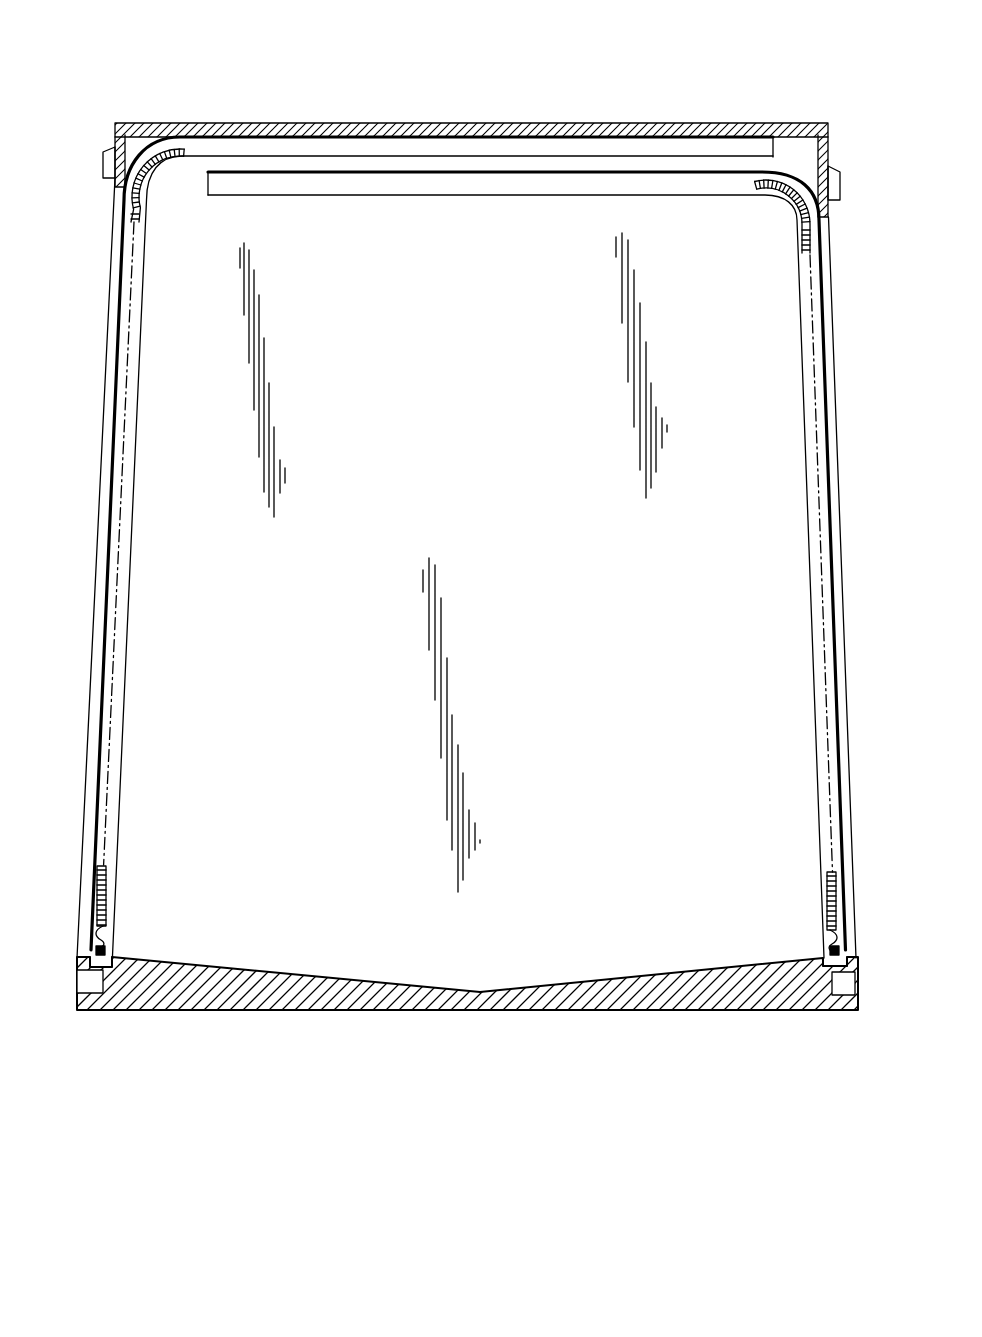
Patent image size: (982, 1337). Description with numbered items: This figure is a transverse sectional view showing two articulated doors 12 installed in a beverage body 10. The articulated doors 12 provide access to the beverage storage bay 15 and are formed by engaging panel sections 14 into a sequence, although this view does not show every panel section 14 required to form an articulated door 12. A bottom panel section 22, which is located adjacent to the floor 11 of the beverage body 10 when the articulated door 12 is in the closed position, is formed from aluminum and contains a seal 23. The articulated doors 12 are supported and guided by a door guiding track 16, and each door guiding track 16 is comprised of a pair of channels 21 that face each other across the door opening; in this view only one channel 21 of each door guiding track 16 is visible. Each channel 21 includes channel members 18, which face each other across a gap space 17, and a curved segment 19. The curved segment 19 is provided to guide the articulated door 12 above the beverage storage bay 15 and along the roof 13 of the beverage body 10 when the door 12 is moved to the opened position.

The beverage body 10 is at (204, 1056).
The floor 11 is at (92, 950).
The articulated door 12 is at (99, 872).
The roof 13 is at (498, 124).
The panel section 14 is at (132, 213).
The beverage storage bay 15 is at (487, 930).
The door guiding track 16 is at (158, 565).
The gap space 17 is at (118, 740).
The channel member 18 is at (111, 299).
The curved segment 19 is at (138, 148).
The channel 21 is at (134, 492).
The bottom panel section 22 is at (104, 940).
The seal 23 is at (107, 973).